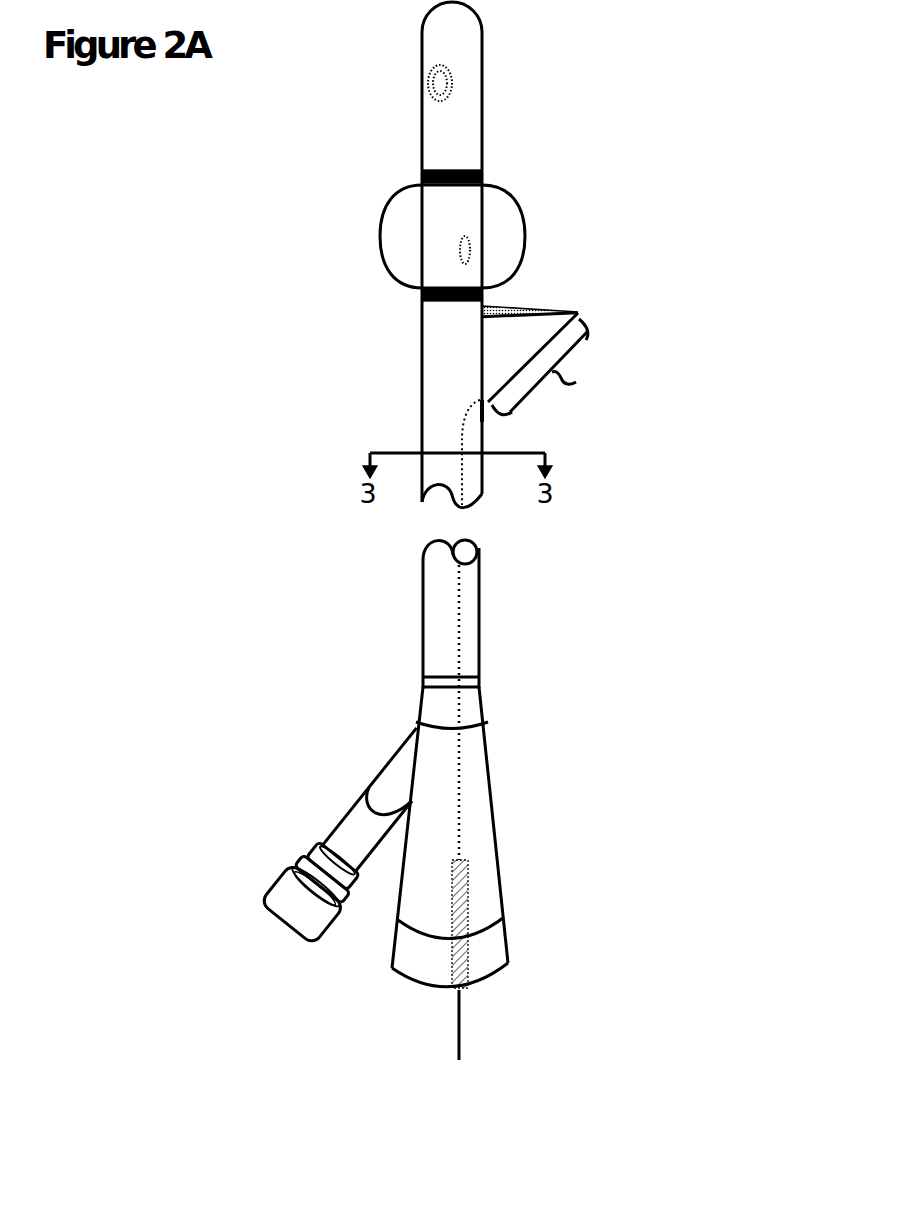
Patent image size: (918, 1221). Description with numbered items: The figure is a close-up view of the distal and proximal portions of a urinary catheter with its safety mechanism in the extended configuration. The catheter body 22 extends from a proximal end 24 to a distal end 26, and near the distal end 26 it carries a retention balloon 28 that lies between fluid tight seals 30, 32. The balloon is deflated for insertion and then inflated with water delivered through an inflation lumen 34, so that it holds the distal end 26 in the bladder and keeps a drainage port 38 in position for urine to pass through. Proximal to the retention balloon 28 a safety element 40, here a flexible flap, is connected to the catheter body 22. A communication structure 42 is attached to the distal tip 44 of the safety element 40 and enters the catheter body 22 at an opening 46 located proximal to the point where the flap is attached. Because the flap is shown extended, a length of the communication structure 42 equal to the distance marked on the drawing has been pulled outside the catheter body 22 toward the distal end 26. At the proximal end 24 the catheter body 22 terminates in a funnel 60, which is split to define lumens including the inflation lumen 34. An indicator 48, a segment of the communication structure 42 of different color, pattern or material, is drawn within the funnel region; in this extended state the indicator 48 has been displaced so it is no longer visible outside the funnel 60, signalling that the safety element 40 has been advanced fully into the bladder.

The catheter body 22 is at (423, 633).
The proximal end 24 is at (347, 727).
The distal end 26 is at (495, 6).
The retention balloon 28 is at (380, 238).
The fluid tight seal 30 is at (420, 180).
The fluid tight seal 32 is at (420, 293).
The inflation lumen 34 is at (466, 236).
The drainage port 38 is at (420, 88).
The safety element 40 is at (535, 305).
The communication structure 42 is at (588, 328).
The distal tip 44 is at (580, 313).
The opening 46 is at (485, 420).
The indicator 48 is at (472, 952).
The funnel 60 is at (500, 860).